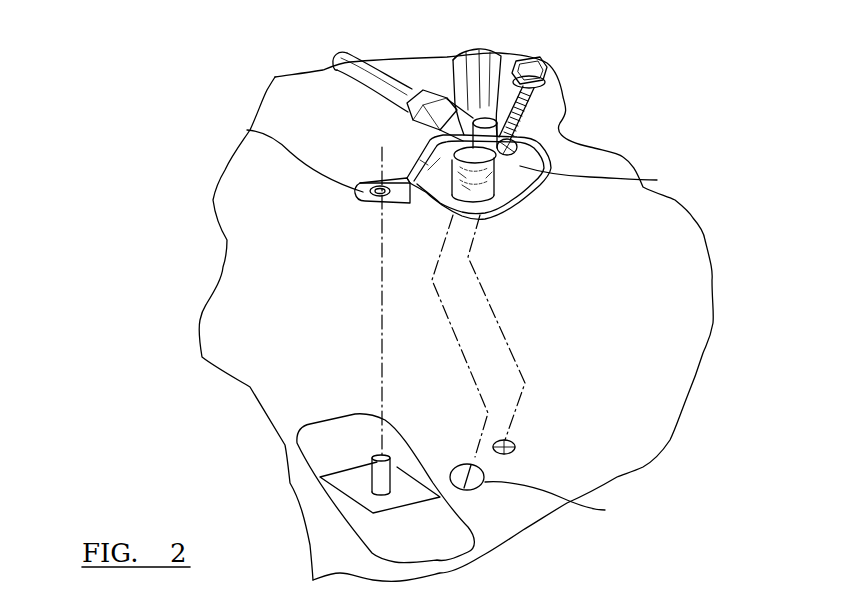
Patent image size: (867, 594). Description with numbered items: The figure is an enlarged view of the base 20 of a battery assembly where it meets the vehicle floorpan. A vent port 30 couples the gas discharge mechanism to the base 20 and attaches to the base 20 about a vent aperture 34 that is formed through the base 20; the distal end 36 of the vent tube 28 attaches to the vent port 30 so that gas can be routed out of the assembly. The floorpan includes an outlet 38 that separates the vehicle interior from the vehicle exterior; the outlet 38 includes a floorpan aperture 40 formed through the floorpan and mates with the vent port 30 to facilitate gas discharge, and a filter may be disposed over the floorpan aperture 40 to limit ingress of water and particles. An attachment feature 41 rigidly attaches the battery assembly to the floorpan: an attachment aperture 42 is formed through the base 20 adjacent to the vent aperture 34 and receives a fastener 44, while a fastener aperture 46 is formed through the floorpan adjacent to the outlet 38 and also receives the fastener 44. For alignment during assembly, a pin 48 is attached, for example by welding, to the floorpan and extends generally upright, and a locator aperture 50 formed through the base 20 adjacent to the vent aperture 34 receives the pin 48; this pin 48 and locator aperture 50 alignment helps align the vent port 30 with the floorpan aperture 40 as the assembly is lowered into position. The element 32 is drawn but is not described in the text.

The base 20 is at (685, 133).
The vent tube 28 is at (371, 85).
The vent port 30 is at (430, 138).
The sensor post 32 is at (474, 160).
The vent aperture 34 is at (513, 210).
The distal end 36 is at (455, 95).
The outlet 38 is at (476, 492).
The floorpan aperture 40 is at (557, 503).
The attachment feature 41 is at (598, 181).
The attachment aperture 42 is at (517, 147).
The fastener 44 is at (540, 63).
The fastener aperture 46 is at (515, 450).
The pin 48 is at (380, 478).
The locator aperture 50 is at (247, 130).